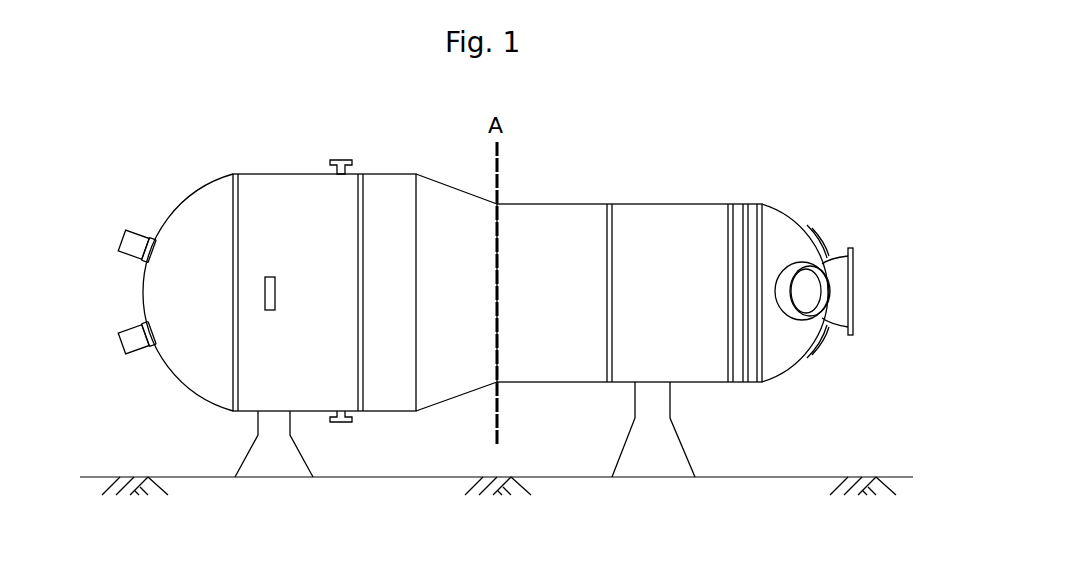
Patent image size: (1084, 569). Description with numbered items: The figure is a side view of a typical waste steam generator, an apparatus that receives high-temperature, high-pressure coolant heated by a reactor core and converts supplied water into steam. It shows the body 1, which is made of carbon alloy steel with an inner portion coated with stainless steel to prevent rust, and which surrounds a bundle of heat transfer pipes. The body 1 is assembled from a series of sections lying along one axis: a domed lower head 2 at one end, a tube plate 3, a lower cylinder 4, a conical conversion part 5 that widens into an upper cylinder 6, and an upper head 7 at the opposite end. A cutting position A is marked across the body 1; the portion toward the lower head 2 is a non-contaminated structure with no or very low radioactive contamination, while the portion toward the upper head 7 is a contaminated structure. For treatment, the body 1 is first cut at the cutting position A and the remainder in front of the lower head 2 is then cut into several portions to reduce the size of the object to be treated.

The body 1 is at (771, 116).
The domed lower head 2 is at (786, 352).
The tube plate 3 is at (752, 382).
The lower cylinder 4 is at (565, 352).
The conical conversion part 5 is at (455, 383).
The upper cylinder 6 is at (316, 365).
The upper head 7 is at (187, 363).